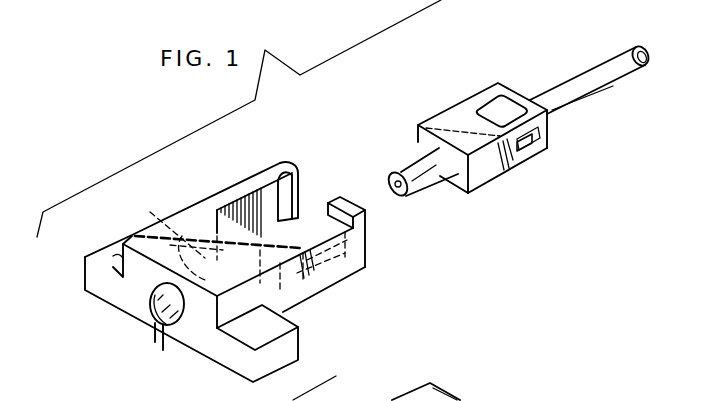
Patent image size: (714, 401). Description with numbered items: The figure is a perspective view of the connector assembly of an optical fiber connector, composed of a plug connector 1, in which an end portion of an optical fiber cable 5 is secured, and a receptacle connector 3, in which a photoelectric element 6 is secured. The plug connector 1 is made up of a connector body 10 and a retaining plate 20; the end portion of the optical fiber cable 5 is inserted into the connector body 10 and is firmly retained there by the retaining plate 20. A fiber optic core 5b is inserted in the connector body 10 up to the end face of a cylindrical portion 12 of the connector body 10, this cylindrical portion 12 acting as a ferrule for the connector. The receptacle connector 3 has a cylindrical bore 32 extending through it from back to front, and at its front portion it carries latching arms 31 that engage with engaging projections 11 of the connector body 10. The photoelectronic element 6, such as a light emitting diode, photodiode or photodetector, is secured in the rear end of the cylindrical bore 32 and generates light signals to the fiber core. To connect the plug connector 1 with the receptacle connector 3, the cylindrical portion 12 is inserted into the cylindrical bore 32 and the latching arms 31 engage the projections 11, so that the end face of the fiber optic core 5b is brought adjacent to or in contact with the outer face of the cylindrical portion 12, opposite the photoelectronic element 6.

The plug connector 1 is at (513, 190).
The receptacle connector 3 is at (189, 205).
The optical fiber cable 5 is at (615, 87).
The fiber optic core 5b is at (392, 197).
The photoelectronic element 6 is at (181, 340).
The connector body 10 is at (452, 125).
The engaging projections 11 is at (533, 146).
The cylindrical portion 12 is at (430, 182).
The retaining plate 20 is at (504, 104).
The latching arms 31 is at (258, 178).
The cylindrical bore 32 is at (152, 213).